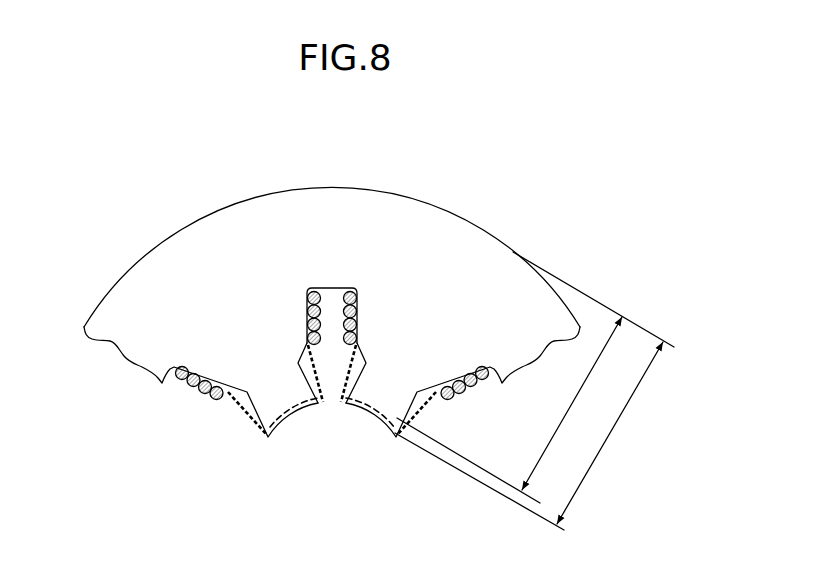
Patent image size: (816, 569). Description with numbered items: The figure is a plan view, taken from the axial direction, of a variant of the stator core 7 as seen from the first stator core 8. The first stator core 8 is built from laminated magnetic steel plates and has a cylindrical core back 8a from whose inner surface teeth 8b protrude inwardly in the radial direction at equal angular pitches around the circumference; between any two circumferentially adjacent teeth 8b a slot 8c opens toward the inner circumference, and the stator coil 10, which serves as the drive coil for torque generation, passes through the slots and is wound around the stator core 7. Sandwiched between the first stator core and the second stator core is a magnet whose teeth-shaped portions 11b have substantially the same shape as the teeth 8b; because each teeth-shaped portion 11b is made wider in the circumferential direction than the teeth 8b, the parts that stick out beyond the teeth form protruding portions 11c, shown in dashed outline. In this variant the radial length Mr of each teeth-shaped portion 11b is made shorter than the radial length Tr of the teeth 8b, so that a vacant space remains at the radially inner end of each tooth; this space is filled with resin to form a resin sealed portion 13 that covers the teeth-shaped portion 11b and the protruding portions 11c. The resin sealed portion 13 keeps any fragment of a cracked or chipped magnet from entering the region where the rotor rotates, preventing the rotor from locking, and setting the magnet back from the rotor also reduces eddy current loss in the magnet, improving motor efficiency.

The stator core 7 is at (423, 162).
The first stator core 8 is at (175, 235).
The core back 8a is at (125, 297).
The teeth 8b is at (385, 390).
The slot 8c is at (333, 300).
The stator coil 10 is at (318, 288).
The teeth-shaped portions 11b is at (290, 404).
The protruding portions 11c is at (248, 418).
The resin sealed portions 13 is at (323, 380).